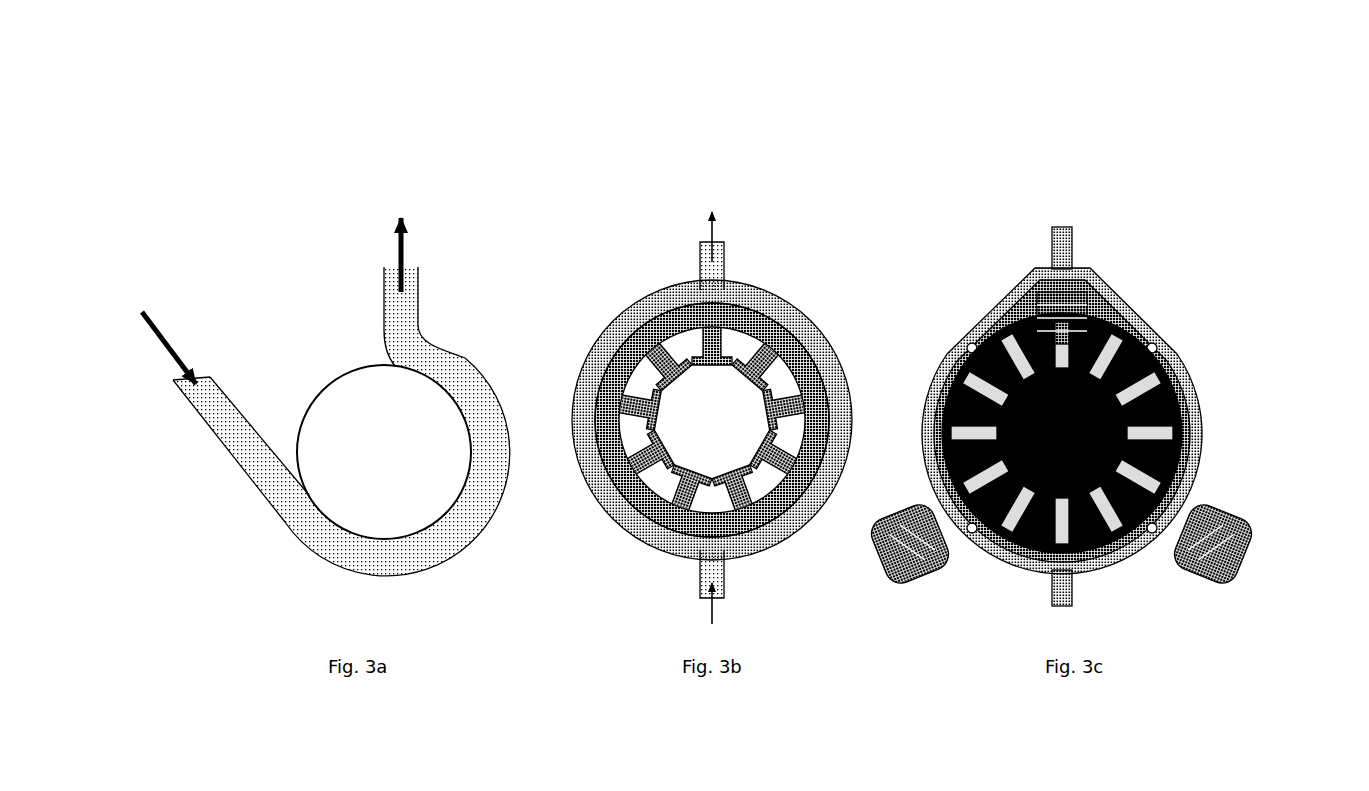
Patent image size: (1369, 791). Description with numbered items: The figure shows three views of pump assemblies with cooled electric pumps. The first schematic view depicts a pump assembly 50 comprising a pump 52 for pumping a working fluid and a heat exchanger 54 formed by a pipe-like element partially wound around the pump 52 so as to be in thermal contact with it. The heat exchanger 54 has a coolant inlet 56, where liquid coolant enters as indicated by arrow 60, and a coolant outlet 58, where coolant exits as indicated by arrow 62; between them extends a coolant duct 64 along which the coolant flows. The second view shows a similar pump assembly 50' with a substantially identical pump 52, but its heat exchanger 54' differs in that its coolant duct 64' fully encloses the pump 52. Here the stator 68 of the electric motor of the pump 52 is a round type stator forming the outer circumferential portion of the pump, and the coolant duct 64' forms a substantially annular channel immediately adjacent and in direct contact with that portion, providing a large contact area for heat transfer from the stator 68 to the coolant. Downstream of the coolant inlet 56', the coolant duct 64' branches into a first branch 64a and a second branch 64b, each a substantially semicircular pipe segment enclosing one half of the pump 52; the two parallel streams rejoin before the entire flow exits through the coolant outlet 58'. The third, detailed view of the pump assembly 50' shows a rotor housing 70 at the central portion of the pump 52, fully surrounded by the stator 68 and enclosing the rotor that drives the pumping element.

In FIG. 3A, the pump assembly 50 is at (273, 381).
In FIG. 3C, the pump assembly 50 is at (1111, 441).
In FIG. 3B, the pump assembly 50' is at (752, 388).
In FIG. 3A, the pump 52 is at (352, 412).
In FIG. 3B, the pump 52 is at (742, 452).
In FIG. 3C, the pump 52 is at (1112, 572).
In FIG. 3A, the heat exchanger 54 is at (273, 414).
In FIG. 3C, the heat exchanger 54 is at (1111, 447).
In FIG. 3B, the heat exchanger 54' is at (752, 446).
In FIG. 3A, the coolant inlet 56 is at (154, 433).
In FIG. 3B, the coolant inlet 56' is at (668, 636).
In FIG. 3C, the coolant inlet 56' is at (1031, 667).
In FIG. 3A, the coolant outlet 58 is at (458, 241).
In FIG. 3B, the coolant outlet 58' is at (782, 256).
In FIG. 3C, the coolant outlet 58' is at (1126, 199).
In FIG. 3A, the arrow 60 is at (142, 322).
In FIG. 3B, the arrow 60 is at (718, 612).
In FIG. 3A, the arrow 62 is at (412, 250).
In FIG. 3B, the arrow 62 is at (718, 215).
In FIG. 3A, the coolant duct 64 is at (341, 473).
In FIG. 3C, the coolant duct 64 is at (1145, 421).
In FIG. 3B, the coolant duct 64' is at (695, 446).
In FIG. 3B, the first branch 64a is at (597, 352).
In FIG. 3C, the first branch 64a is at (932, 450).
In FIG. 3B, the second branch 64b is at (845, 377).
In FIG. 3C, the second branch 64b is at (1200, 410).
In FIG. 3B, the stator 68 is at (648, 522).
In FIG. 3C, the stator 68 is at (1130, 320).
In FIG. 3C, the rotor housing 70 is at (1180, 372).